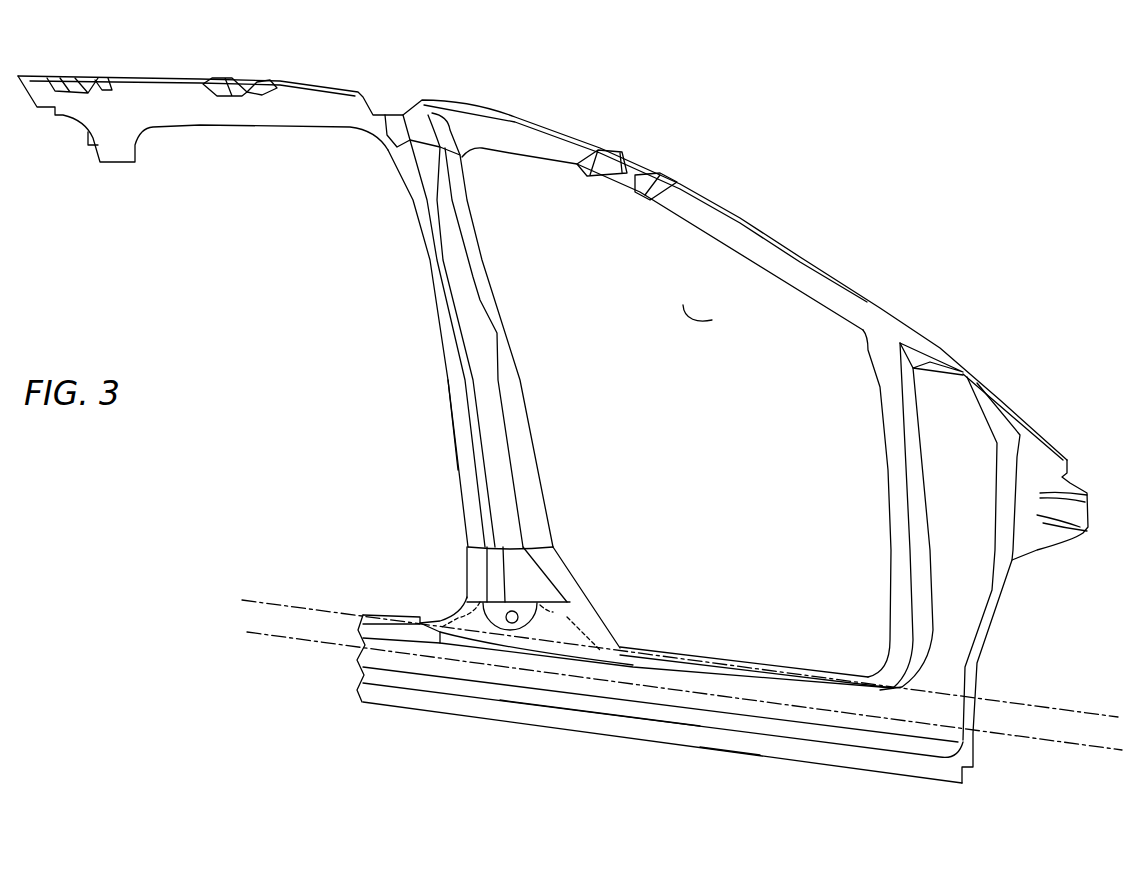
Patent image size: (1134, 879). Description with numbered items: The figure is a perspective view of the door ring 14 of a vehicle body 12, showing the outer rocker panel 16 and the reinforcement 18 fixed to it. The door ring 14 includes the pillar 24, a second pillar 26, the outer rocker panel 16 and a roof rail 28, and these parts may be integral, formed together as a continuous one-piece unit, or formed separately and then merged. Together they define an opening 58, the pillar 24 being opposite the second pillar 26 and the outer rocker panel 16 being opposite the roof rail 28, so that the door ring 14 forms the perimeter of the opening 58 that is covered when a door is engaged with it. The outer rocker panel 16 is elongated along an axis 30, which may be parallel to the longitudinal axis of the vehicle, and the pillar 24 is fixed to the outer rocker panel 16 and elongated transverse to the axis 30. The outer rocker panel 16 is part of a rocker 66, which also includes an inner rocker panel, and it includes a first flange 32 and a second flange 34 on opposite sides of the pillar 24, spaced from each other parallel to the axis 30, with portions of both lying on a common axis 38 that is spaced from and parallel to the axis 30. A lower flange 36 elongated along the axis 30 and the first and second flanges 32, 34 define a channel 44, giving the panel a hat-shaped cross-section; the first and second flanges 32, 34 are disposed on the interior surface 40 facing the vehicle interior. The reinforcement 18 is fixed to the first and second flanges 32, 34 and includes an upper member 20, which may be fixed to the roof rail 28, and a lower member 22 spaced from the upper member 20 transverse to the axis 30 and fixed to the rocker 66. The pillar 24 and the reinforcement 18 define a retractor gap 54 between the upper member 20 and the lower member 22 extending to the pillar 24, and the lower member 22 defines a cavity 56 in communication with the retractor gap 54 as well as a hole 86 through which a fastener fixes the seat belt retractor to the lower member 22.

The vehicle body 12 is at (531, 82).
The door ring 14 is at (645, 120).
The outer rocker panel 16 is at (737, 707).
The reinforcement 18 is at (456, 596).
The upper member 20 is at (462, 422).
The lower member 22 is at (450, 613).
The pillar 24 is at (553, 557).
The second pillar 26 is at (962, 595).
The roof rail 28 is at (870, 310).
The axis 30 is at (258, 633).
The first flange 32 is at (712, 657).
The second flange 34 is at (380, 612).
The lower flange 36 is at (628, 725).
The common axis 38 is at (257, 602).
The interior surface 40 is at (843, 722).
The channel 44 is at (572, 683).
The retractor gap 54 is at (540, 603).
The cavity 56 is at (570, 615).
The opening 58 is at (683, 305).
The rocker 66 is at (733, 772).
The hole 86 is at (507, 623).